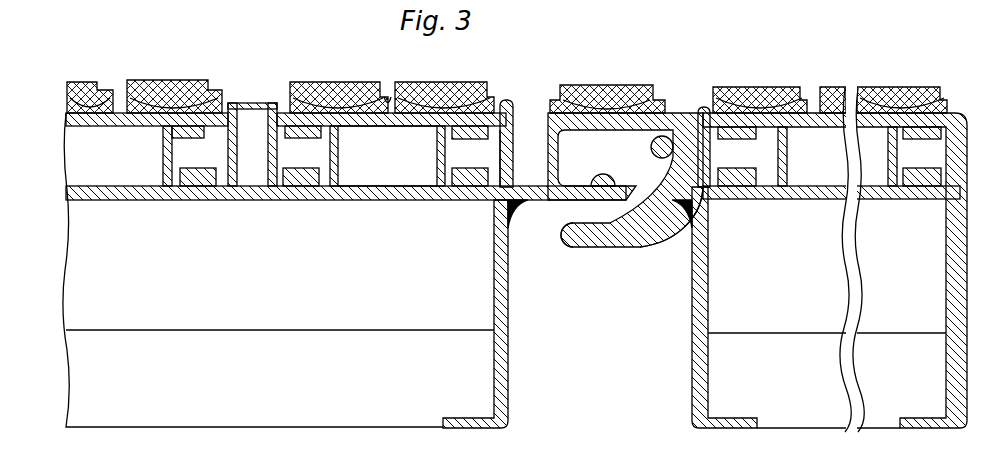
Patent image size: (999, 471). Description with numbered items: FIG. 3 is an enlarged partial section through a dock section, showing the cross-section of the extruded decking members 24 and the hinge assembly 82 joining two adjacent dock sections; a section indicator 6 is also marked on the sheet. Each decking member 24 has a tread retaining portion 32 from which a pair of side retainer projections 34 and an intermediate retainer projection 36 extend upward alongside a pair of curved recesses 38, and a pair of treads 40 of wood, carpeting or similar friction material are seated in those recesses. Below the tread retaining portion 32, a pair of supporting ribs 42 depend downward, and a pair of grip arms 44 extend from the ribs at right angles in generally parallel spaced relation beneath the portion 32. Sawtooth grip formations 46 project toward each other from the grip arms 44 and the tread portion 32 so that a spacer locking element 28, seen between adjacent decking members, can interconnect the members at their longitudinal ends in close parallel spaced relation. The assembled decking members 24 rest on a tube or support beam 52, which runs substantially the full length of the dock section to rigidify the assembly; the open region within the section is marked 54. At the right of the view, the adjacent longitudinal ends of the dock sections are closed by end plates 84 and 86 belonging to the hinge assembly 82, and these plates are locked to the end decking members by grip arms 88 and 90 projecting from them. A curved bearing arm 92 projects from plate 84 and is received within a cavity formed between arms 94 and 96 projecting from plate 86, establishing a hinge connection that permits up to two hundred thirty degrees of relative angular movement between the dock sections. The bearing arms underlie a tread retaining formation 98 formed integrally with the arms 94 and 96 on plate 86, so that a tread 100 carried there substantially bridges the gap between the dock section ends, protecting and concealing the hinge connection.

The section line 6- 6 is at (282, 448).
The decking member 24 is at (440, 97).
The spacer locking element 28 is at (236, 90).
The tread retaining portion 32 is at (395, 120).
The side retainer projections 34 is at (494, 101).
The intermediate retainer projection 36 is at (390, 97).
The curved recesses 38 is at (310, 112).
The treads 40 is at (341, 100).
The supporting ribs 42 is at (350, 177).
The grip arms 44 is at (308, 178).
The sawtooth grip formations 46 is at (296, 182).
The support beam 52 is at (411, 194).
The panel 54 is at (156, 300).
The hinge assembly 82 is at (607, 178).
The end plate 84 is at (513, 298).
The end plate 86 is at (692, 338).
The grip arm 88 is at (507, 157).
The grip arm 90 is at (511, 148).
The curved bearing arm 92 is at (641, 178).
The bearing arm 94 is at (566, 173).
The bearing arm 96 is at (600, 235).
The seal cap 98 is at (600, 116).
The tread 100 is at (634, 92).